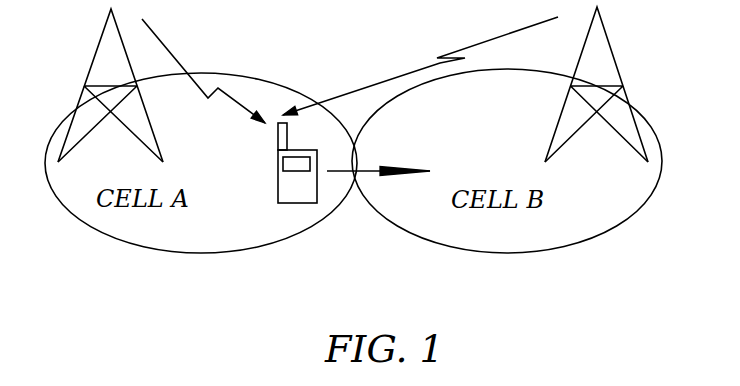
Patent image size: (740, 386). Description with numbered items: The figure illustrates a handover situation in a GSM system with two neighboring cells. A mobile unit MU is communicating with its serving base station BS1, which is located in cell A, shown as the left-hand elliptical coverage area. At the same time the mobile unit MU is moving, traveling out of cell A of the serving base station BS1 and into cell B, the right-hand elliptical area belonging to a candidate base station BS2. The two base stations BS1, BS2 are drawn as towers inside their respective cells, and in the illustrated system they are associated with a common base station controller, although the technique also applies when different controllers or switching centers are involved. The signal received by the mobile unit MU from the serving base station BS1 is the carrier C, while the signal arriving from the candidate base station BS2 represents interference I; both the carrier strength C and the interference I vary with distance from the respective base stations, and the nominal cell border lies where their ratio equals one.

The serving base station BS1 is at (103, 28).
The candidate base station BS2 is at (608, 37).
The carrier strength C is at (203, 68).
The interference I is at (420, 64).
The mobile unit MU is at (354, 163).